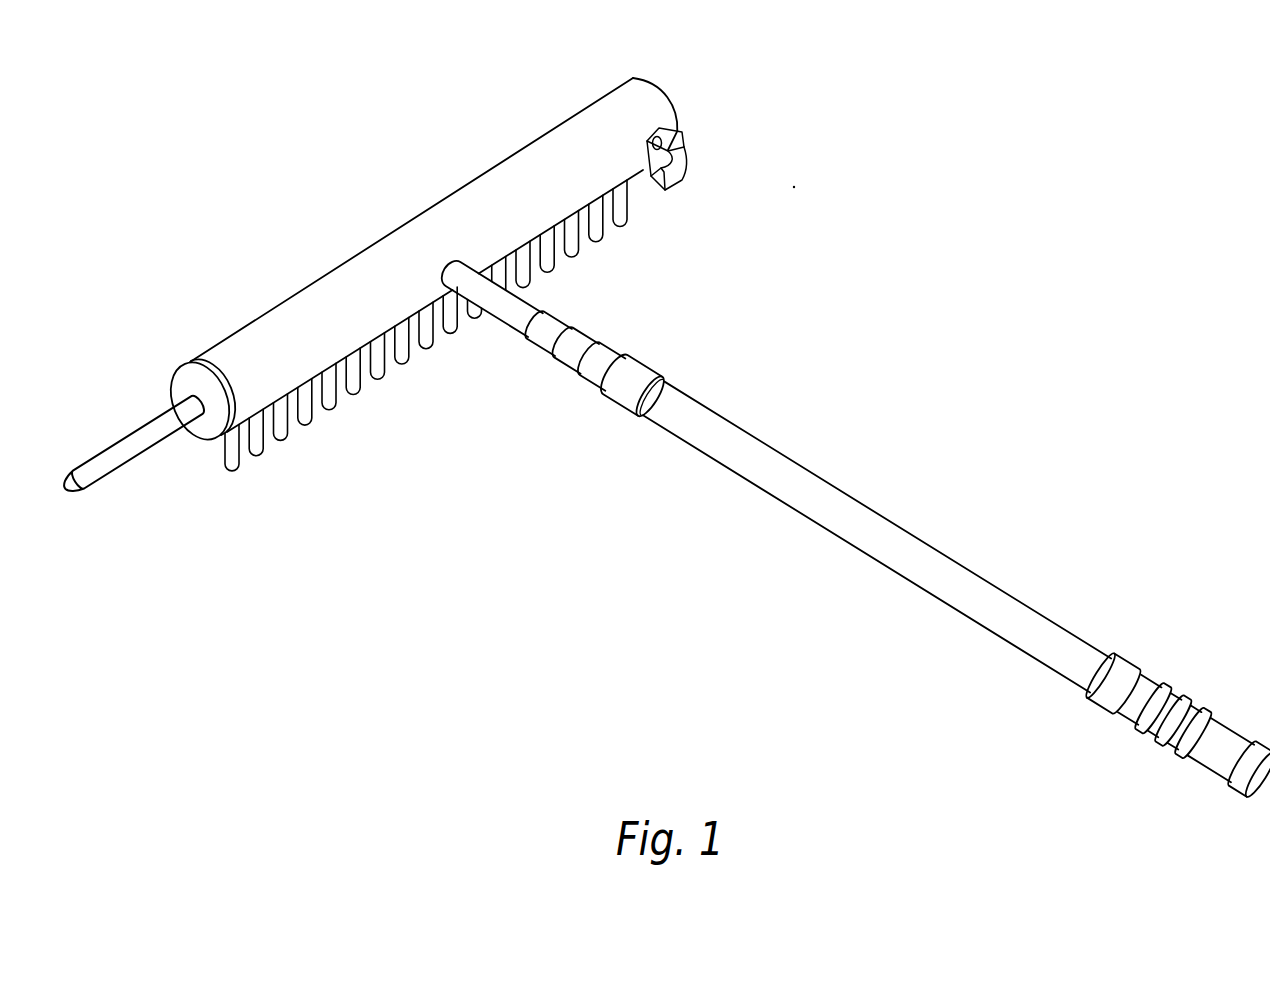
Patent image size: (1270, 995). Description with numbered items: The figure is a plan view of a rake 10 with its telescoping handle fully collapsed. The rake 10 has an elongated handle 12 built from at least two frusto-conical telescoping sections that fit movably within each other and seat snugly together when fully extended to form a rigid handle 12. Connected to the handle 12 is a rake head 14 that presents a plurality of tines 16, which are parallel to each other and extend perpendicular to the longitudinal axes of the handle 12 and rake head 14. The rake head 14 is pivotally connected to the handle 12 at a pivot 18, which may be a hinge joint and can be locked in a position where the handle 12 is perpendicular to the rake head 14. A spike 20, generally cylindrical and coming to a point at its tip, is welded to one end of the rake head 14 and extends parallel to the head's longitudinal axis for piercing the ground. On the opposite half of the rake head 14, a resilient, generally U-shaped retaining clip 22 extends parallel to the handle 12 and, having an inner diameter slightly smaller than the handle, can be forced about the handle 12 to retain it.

The rake 10 is at (206, 99).
The handle 12 is at (952, 558).
The rake head 14 is at (462, 188).
The tines 16 is at (378, 376).
The pivot 18 is at (542, 296).
The spike 20 is at (138, 432).
The retaining clip 22 is at (683, 178).